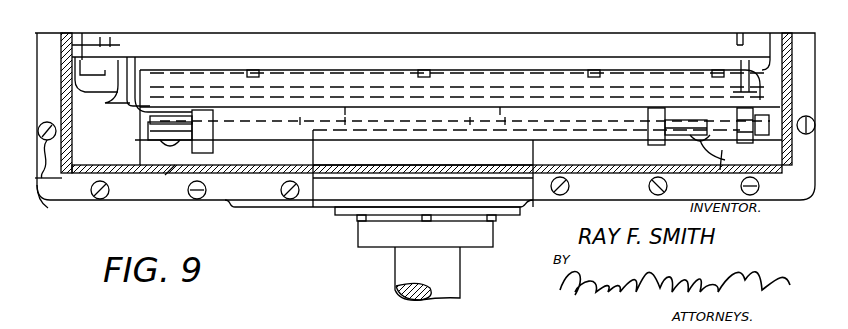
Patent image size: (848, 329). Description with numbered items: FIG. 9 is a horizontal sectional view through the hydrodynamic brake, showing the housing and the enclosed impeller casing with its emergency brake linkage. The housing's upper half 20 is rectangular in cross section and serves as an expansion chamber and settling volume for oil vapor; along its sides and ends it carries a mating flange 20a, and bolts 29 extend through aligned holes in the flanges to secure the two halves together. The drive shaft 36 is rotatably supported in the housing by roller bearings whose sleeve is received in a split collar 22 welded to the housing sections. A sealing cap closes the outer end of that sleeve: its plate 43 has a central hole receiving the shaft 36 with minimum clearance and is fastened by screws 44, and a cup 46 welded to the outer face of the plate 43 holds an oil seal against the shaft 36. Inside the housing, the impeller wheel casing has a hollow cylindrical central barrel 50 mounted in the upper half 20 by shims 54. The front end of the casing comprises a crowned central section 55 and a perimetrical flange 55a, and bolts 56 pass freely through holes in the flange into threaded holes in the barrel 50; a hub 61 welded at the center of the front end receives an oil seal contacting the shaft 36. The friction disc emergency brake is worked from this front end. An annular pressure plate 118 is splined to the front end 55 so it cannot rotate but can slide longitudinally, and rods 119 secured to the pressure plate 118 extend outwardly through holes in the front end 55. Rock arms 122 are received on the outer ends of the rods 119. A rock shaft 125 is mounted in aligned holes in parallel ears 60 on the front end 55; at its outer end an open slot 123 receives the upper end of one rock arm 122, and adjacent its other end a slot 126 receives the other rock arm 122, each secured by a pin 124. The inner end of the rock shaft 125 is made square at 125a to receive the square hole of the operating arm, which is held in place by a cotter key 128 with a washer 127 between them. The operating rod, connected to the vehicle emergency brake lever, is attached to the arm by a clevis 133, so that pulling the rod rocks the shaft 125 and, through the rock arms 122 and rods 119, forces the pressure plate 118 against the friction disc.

The upper half of housing 20 is at (226, 201).
The mating flange 20a is at (48, 208).
The split collar 22 is at (320, 207).
The bolt 29 is at (90, 190).
The shaft 36 is at (400, 273).
The plate 43 is at (330, 213).
The screw 44 is at (356, 219).
The cup 46 is at (362, 240).
The central barrel 50 is at (61, 57).
The shim 54 is at (82, 33).
The crowned central section of front end 55 is at (120, 110).
The perimetrical flange 55a is at (118, 94).
The bolt 56 is at (61, 73).
The ear 60 is at (213, 124).
The hub 61 is at (458, 105).
The pressure plate 118 is at (127, 120).
The rod 119 is at (135, 120).
The rock arm 122 is at (152, 130).
The open slot 123 is at (165, 147).
The pin 124 is at (166, 176).
The rock shaft 125 is at (285, 145).
The square end of rock shaft 125a is at (722, 169).
The slot 126 is at (713, 150).
The washer 127 is at (770, 140).
The cotter key 128 is at (766, 104).
The clevis 133 is at (731, 125).